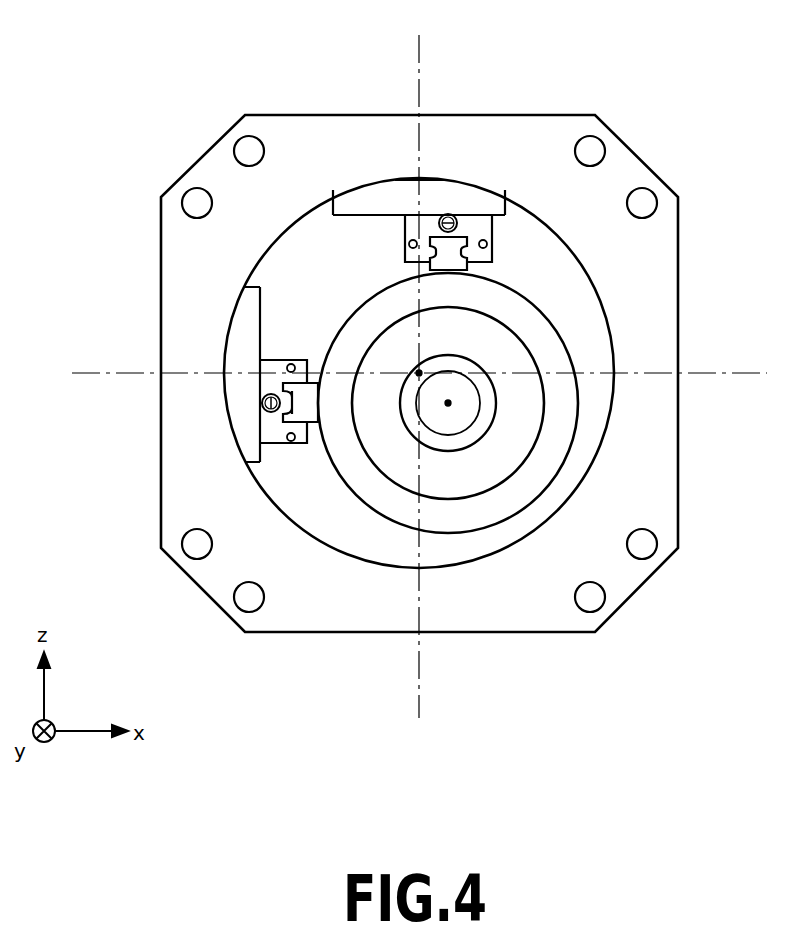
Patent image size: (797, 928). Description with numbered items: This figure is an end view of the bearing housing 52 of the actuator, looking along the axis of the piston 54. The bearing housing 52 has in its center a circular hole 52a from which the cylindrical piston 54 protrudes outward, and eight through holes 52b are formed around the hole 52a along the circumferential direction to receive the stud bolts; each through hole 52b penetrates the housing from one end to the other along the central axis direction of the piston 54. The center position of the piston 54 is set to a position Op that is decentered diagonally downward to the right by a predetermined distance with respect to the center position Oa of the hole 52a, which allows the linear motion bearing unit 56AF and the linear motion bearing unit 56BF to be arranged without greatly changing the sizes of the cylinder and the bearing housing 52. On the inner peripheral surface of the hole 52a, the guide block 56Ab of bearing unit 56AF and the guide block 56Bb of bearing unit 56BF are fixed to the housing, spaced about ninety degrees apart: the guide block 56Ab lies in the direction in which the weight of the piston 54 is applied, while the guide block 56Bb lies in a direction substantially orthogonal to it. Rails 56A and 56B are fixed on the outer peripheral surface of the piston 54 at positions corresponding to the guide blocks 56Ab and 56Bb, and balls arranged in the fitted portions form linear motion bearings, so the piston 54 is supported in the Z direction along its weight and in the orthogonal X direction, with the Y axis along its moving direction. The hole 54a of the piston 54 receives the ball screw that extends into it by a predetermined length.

The bearing housing 52 is at (572, 128).
The circular hole 52a is at (572, 252).
The through holes 52b is at (249, 151).
The piston 54 is at (558, 363).
The hole of the piston 54a is at (533, 438).
The rail 56A is at (463, 237).
The linear motion bearing unit 56AF is at (368, 197).
The guide block 56Ab is at (440, 214).
The rail 56B is at (290, 418).
The linear motion bearing unit 56BF is at (248, 405).
The guide block 56Bb is at (272, 368).
The center position of the hole Oa is at (419, 373).
The center position of the piston Op is at (448, 403).